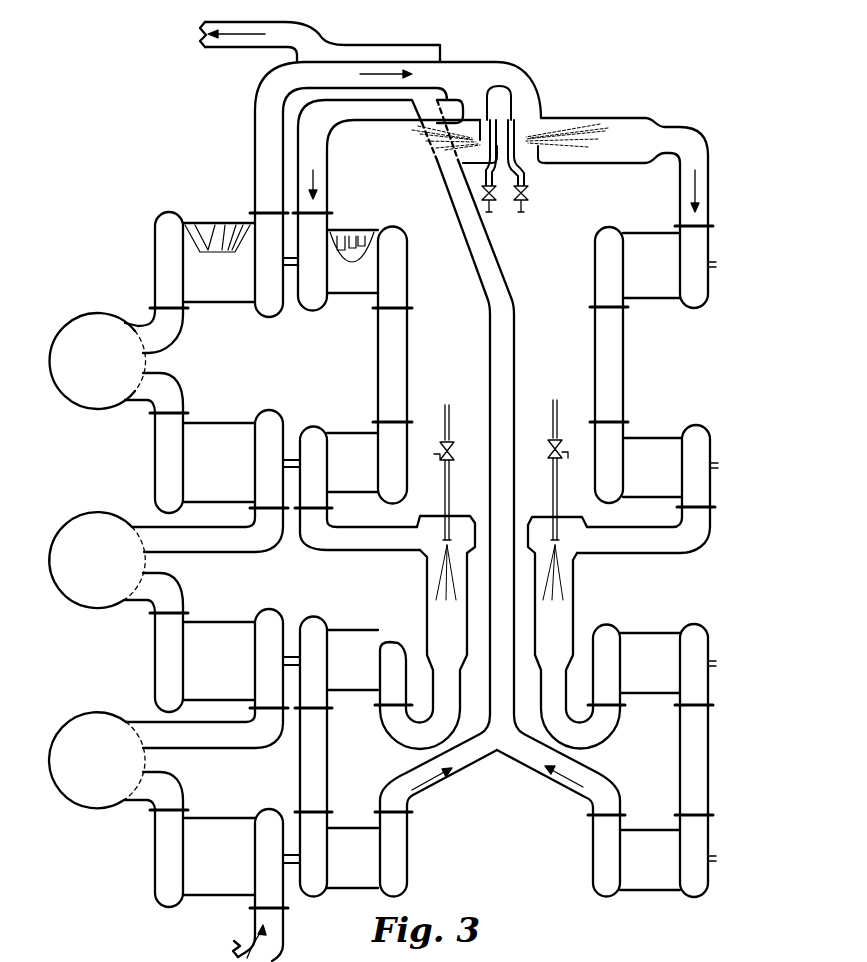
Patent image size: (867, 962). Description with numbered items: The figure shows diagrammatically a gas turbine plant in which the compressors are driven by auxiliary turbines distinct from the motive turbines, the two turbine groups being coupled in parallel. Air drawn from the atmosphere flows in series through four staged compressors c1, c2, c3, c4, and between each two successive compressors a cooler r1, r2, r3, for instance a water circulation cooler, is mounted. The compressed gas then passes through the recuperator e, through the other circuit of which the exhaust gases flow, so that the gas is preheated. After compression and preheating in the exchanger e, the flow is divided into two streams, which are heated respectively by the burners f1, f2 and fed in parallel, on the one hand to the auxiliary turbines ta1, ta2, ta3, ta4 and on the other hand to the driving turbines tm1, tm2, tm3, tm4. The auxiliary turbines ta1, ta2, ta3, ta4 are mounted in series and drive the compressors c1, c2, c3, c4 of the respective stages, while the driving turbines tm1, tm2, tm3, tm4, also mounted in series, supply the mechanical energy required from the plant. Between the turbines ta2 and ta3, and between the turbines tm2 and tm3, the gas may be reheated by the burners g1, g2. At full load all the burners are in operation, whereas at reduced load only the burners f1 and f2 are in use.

The recuperator e is at (411, 58).
The burner f1 is at (481, 133).
The burner f2 is at (521, 146).
The compressor c1 is at (207, 222).
The compressor c2 is at (205, 437).
The compressor c3 is at (208, 643).
The compressor c4 is at (207, 842).
The cooler r1 is at (88, 333).
The cooler r2 is at (90, 533).
The cooler r3 is at (90, 732).
The auxiliary turbine ta1 is at (357, 235).
The auxiliary turbine ta2 is at (342, 452).
The auxiliary turbine ta3 is at (342, 647).
The auxiliary turbine ta4 is at (342, 847).
The driving turbine tm1 is at (638, 253).
The driving turbine tm2 is at (645, 450).
The driving turbine tm3 is at (640, 647).
The driving turbine tm4 is at (640, 850).
The burner g1 is at (448, 515).
The burner g2 is at (553, 523).